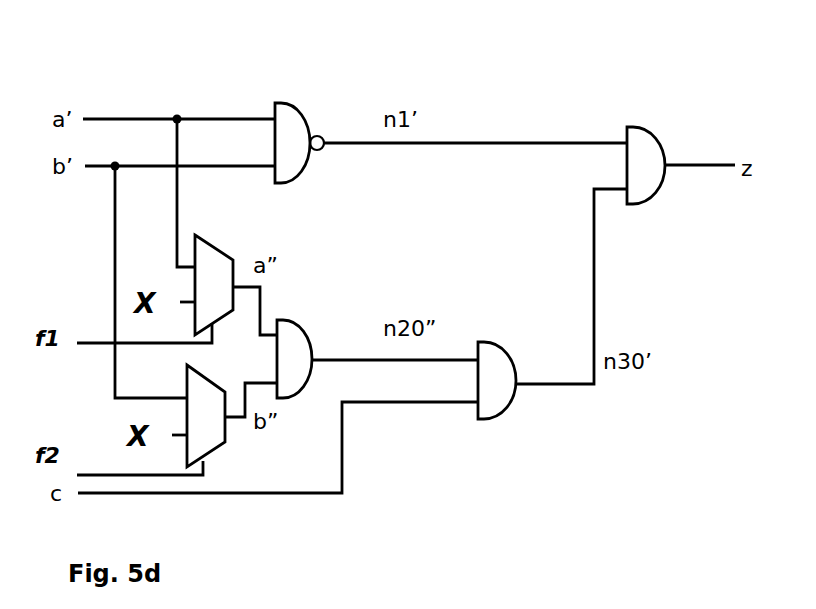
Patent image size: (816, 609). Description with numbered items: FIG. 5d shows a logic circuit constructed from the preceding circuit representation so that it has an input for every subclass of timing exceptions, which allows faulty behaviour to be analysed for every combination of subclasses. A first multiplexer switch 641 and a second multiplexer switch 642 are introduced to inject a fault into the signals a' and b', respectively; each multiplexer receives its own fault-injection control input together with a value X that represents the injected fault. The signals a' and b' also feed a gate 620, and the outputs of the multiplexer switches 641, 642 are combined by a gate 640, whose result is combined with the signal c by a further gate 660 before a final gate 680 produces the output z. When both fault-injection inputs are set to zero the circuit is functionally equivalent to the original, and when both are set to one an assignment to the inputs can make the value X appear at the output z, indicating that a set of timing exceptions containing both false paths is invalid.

The NAND gate 620 is at (295, 143).
The AND gate 680 is at (640, 152).
The first multiplexer switch 641 is at (215, 275).
The AND gate 640 is at (293, 353).
The second multiplexer switch 642 is at (207, 433).
The AND gate 660 is at (490, 373).